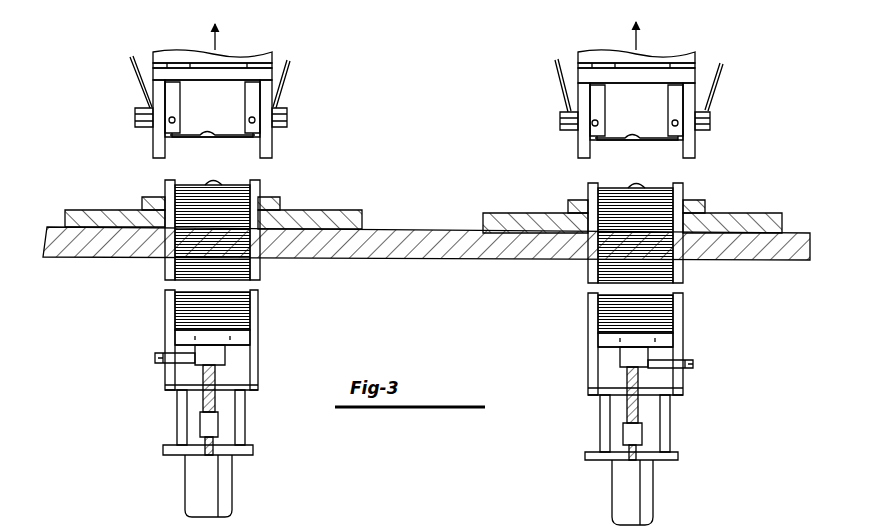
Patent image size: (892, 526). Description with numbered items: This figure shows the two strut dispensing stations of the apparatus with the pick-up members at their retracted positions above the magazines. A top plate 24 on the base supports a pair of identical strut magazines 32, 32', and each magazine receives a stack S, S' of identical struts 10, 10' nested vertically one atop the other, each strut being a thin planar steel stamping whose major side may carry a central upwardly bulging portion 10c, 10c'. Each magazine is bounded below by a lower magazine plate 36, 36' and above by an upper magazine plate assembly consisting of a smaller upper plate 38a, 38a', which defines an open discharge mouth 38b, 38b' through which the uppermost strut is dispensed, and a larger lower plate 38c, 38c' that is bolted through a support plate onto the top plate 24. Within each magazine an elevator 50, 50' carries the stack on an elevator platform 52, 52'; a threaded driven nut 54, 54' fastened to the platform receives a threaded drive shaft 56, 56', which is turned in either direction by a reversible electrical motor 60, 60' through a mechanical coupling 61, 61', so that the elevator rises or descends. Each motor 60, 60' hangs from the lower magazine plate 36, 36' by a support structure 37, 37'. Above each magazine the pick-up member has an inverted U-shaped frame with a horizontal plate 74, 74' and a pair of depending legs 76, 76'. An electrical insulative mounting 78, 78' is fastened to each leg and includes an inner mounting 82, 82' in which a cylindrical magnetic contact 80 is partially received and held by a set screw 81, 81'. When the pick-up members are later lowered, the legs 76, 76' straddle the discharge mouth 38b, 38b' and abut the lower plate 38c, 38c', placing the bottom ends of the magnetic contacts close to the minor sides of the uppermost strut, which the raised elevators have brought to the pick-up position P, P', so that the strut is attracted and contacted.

The strut 10 is at (635, 220).
The strut 10' is at (252, 222).
The central upwardly bulging portion 10c is at (636, 111).
The central upwardly bulging portion 10c' is at (212, 108).
The top plate 24 is at (758, 258).
The strut magazine 32 is at (608, 243).
The strut magazine 32' is at (252, 238).
The lower magazine plate 36 is at (610, 362).
The lower magazine plate 36' is at (239, 356).
The support structure 37 is at (610, 431).
The support structure 37' is at (175, 422).
The smaller upper plate 38a is at (736, 211).
The smaller upper plate 38a' is at (115, 207).
The magazine discharge mouth 38b is at (557, 183).
The magazine discharge mouth 38b' is at (136, 169).
The larger lower plate 38c is at (535, 212).
The larger lower plate 38c' is at (312, 210).
The elevator 50 is at (613, 360).
The elevator 50' is at (250, 329).
The elevator platform 52 is at (603, 337).
The elevator platform 52' is at (179, 334).
The threaded driven nut 54 is at (688, 352).
The threaded driven nut 54' is at (240, 354).
The threaded drive shaft 56 is at (682, 413).
The threaded drive shaft 56' is at (160, 410).
The electrical motor 60 is at (667, 492).
The electrical motor 60' is at (250, 486).
The mechanical coupling 61 is at (612, 462).
The mechanical coupling 61' is at (254, 432).
The horizontal plate 74 is at (636, 51).
The horizontal plate 74' is at (212, 51).
The depending leg 76 is at (637, 108).
The depending leg 76' is at (205, 107).
The electrical insulative mounting 78 is at (629, 144).
The electrical insulative mounting 78' is at (205, 129).
The magnetic contact 80 is at (250, 140).
The set screw 81 is at (677, 133).
The set screw 81' is at (252, 114).
The inner mounting 82 is at (642, 110).
The inner mounting 82' is at (245, 77).
The pick-up position P is at (690, 171).
The pick-up position P' is at (263, 168).
The stack S is at (657, 314).
The stack S' is at (182, 296).